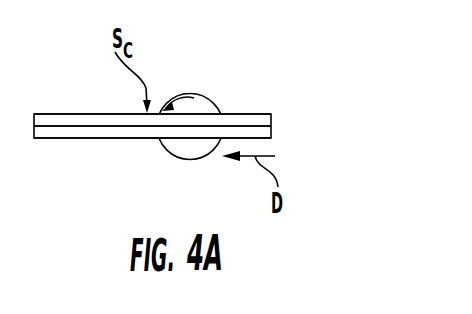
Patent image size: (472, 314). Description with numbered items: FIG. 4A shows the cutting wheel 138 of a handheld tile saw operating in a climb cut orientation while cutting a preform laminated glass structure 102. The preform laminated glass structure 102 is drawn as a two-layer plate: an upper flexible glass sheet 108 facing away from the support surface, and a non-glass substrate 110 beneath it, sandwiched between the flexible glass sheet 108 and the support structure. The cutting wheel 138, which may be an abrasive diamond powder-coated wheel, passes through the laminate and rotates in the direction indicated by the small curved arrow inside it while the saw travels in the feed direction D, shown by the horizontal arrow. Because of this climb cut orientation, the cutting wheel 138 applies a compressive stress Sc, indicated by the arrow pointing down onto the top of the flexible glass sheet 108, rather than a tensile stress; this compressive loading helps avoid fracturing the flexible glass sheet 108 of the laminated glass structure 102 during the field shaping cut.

The preform laminated glass structure 102 is at (280, 97).
The flexible glass sheet 108 is at (80, 114).
The non-glass substrate 110 is at (72, 131).
The cutting wheel 138 is at (203, 105).